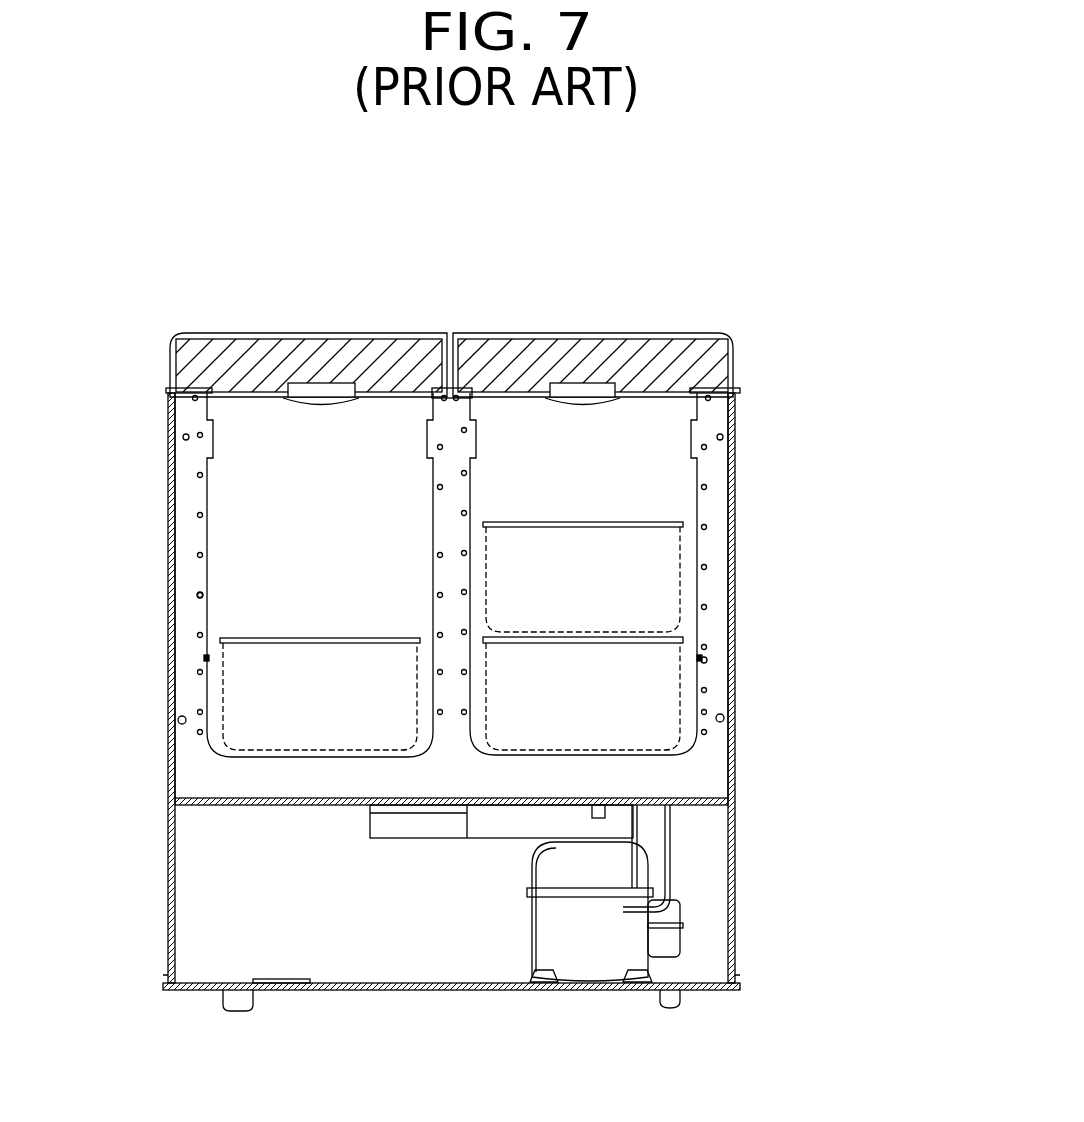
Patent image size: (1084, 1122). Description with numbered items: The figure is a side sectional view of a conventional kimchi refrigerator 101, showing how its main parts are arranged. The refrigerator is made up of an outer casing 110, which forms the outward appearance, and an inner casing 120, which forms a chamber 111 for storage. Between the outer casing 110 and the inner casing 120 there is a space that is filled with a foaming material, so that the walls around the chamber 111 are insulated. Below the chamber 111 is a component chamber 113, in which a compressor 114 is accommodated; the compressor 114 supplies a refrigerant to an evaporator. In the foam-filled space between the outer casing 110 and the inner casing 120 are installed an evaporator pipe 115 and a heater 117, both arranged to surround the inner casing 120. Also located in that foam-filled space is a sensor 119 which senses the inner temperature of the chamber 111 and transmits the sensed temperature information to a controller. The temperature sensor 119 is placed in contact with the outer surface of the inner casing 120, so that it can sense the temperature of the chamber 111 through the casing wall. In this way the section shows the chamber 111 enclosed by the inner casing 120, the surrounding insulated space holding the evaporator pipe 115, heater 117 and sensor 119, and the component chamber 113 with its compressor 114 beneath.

The refrigerator (prior art) 101 is at (867, 239).
The outer casing 110 is at (738, 449).
The chamber 111 is at (345, 488).
The component chamber 113 is at (368, 945).
The compressor 114 is at (593, 953).
The evaporator pipe 115 is at (703, 527).
The heater 117 is at (697, 708).
The sensor 119 is at (200, 595).
The inner casing 120 is at (697, 585).